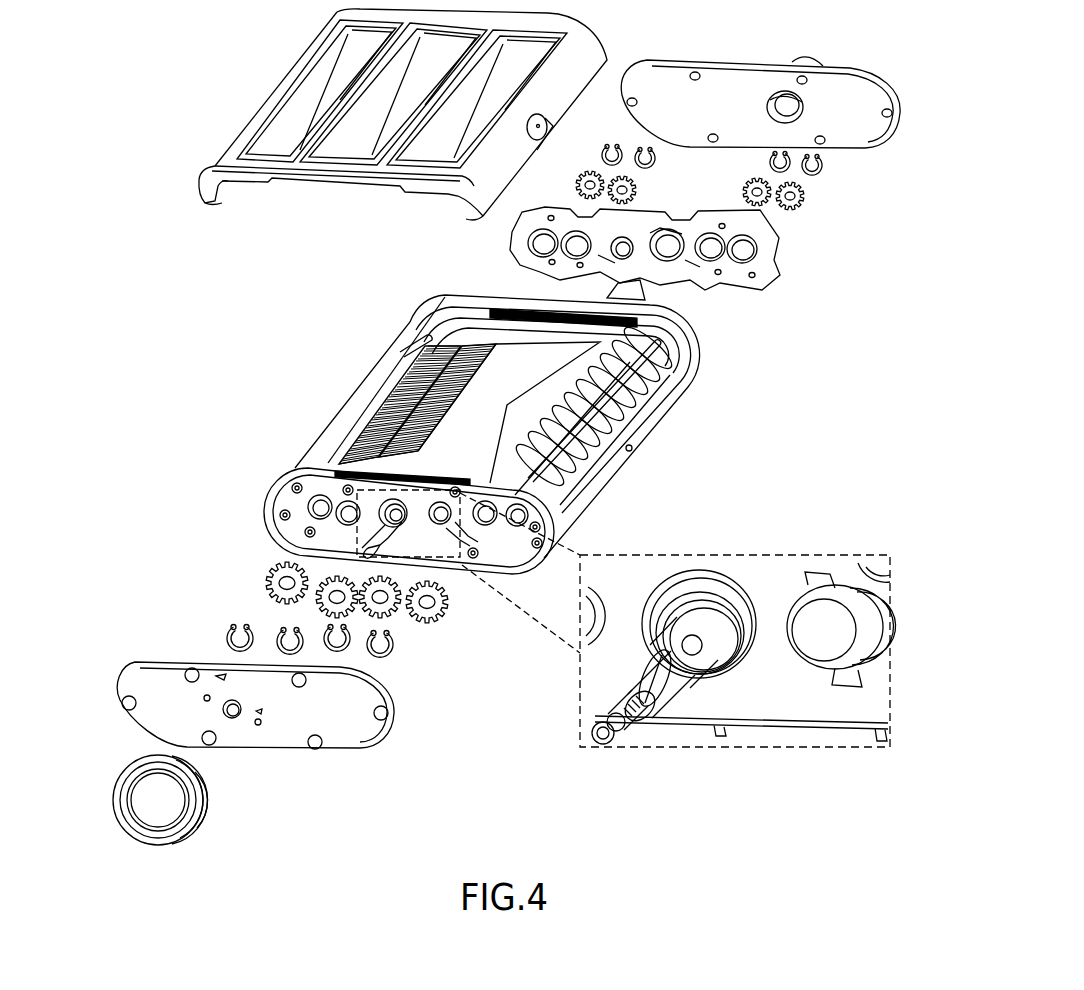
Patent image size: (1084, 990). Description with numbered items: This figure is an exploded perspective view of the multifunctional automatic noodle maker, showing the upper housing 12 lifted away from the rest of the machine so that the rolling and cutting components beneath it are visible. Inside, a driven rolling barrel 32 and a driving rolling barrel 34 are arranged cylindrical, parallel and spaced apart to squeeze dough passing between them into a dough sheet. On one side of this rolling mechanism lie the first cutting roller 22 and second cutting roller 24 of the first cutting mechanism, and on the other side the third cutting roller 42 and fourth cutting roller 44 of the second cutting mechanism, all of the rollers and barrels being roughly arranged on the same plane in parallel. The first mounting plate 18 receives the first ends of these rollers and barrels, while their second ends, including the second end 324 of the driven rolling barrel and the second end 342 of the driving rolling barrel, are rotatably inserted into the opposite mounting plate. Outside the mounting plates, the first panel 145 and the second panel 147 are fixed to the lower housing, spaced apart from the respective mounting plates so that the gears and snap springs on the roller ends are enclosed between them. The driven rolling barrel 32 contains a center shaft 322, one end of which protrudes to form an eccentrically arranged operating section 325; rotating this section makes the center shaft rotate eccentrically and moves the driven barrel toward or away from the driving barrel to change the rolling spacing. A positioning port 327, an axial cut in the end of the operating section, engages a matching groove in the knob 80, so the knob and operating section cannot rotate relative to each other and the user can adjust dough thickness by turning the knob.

The upper housing 12 is at (265, 137).
The first panel 145 is at (730, 80).
The first mounting plate 18 is at (730, 277).
The first cutting roller 22 is at (375, 408).
The second cutting roller 24 is at (352, 455).
The driven rolling barrel 32 is at (490, 390).
The driving rolling barrel 34 is at (527, 397).
The third cutting roller 42 is at (652, 417).
The fourth cutting roller 44 is at (633, 449).
The second end of the driven rolling barrel 324 is at (675, 590).
The center shaft 322 is at (730, 617).
The second end of the driving rolling barrel 342 is at (825, 627).
The operating section 325 is at (688, 657).
The positioning port 327 is at (658, 688).
The second panel 147 is at (185, 678).
The knob 80 is at (168, 806).